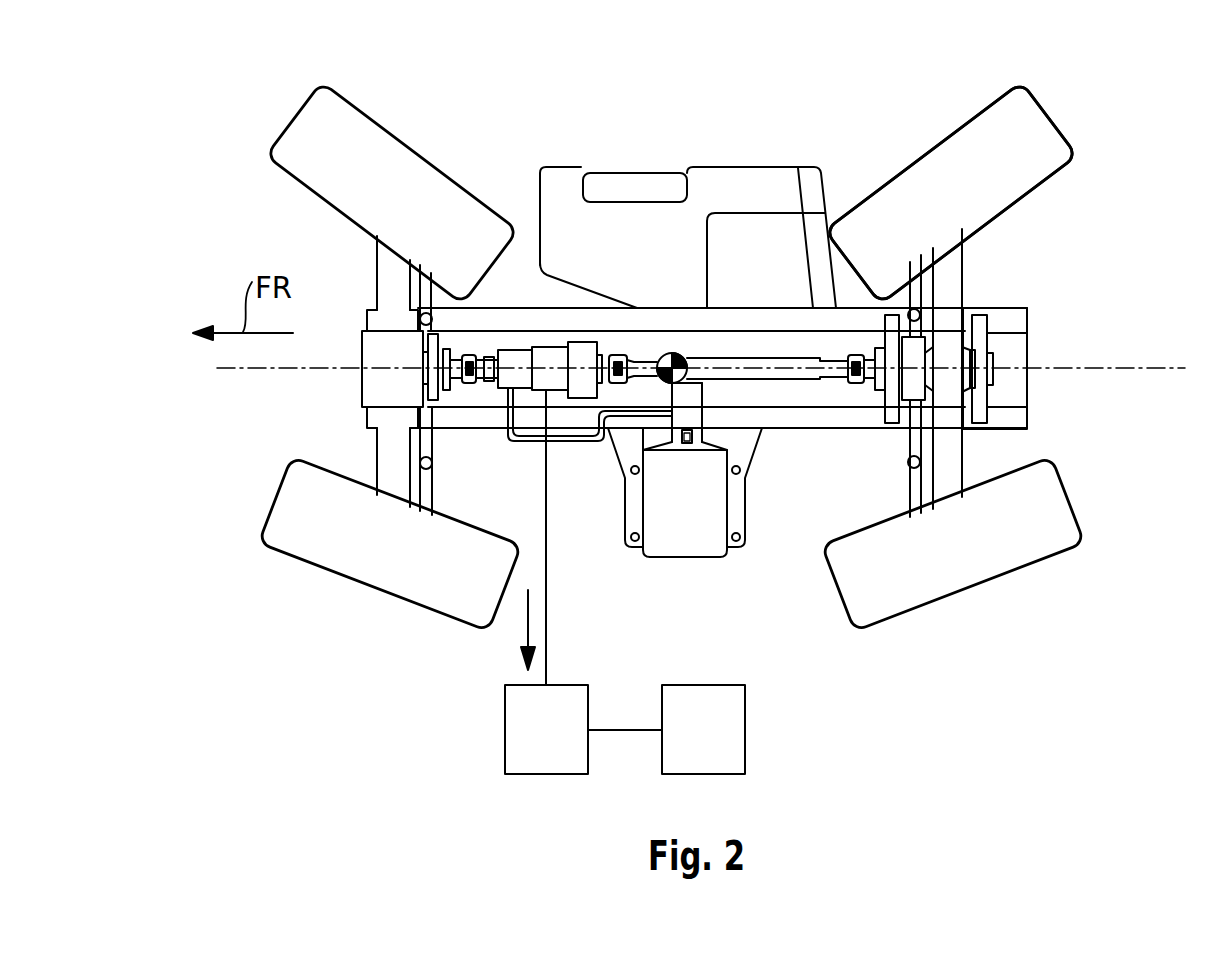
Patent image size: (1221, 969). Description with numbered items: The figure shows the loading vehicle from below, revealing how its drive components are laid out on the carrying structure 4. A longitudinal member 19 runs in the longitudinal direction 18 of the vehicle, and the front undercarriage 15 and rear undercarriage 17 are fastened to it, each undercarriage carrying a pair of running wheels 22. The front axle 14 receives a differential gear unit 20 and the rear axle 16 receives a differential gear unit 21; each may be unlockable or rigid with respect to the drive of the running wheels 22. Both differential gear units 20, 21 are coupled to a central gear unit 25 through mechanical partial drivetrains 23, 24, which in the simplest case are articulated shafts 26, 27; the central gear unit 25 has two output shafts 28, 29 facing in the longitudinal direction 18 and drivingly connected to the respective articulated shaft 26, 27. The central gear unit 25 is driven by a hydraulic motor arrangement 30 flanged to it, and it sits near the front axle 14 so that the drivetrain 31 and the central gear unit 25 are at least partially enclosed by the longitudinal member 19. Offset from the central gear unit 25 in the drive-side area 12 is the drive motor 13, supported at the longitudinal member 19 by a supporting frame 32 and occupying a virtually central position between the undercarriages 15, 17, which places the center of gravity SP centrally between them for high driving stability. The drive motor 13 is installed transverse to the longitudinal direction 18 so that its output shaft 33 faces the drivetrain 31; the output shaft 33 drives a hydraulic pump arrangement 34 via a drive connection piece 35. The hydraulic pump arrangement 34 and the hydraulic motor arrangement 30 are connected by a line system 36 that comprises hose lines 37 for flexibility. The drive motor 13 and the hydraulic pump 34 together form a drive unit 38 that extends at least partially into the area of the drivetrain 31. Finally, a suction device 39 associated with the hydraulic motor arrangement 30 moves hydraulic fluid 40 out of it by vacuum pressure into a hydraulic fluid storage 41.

The carrying structure 4 is at (975, 266).
The drive-side area 12 is at (622, 585).
The drive motor 13 is at (700, 547).
The front axle 14 is at (386, 461).
The front undercarriage 15 is at (362, 262).
The rear axle 16 is at (957, 465).
The rear undercarriage 17 is at (978, 96).
The longitudinal direction 18 is at (1180, 392).
The longitudinal member 19 is at (1017, 318).
The differential gear unit 20 is at (382, 382).
The differential gear unit 21 is at (943, 353).
The running wheels 22 is at (405, 208).
The partial drivetrain 23 is at (824, 379).
The partial drivetrain 24 is at (488, 397).
The central gear unit 25 is at (583, 348).
The articulated shaft 26 is at (494, 350).
The articulated shaft 27 is at (791, 348).
The output shaft 28 is at (483, 352).
The output shaft 29 is at (612, 383).
The hydraulic motor arrangement 30 is at (565, 384).
The drivetrain 31 is at (772, 373).
The supporting frame 32 is at (737, 510).
The output shaft 33 is at (688, 444).
The hydraulic pump arrangement 34 is at (693, 412).
The drive connection piece 35 is at (684, 444).
The line system 36 is at (529, 445).
The hose lines 37 is at (559, 456).
The drive unit 38 is at (720, 436).
The suction device 39 is at (562, 748).
The hydraulic fluid 40 is at (527, 633).
The hydraulic fluid storage 41 is at (718, 748).
The center of gravity SP is at (673, 353).